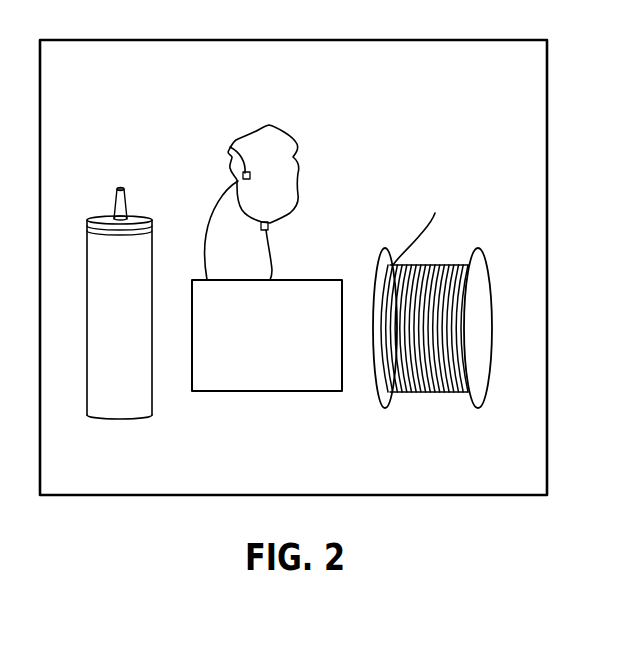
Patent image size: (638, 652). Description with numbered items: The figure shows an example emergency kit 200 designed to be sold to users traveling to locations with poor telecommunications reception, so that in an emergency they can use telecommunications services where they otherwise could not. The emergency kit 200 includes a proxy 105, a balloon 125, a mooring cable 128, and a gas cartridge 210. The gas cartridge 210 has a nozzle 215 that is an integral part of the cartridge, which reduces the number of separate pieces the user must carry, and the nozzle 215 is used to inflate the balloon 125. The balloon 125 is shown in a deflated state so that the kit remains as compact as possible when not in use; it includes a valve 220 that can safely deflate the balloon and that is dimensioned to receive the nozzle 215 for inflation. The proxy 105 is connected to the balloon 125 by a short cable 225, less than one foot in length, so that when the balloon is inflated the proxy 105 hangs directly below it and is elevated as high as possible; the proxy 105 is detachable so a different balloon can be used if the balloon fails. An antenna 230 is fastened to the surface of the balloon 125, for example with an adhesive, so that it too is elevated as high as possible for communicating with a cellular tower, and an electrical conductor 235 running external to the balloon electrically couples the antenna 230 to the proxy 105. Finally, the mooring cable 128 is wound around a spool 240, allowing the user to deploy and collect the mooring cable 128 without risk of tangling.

The emergency kit 200 is at (300, 40).
The gas cartridge 210 is at (122, 418).
The nozzle 215 is at (116, 190).
The balloon 125 is at (287, 130).
The antenna 230 is at (231, 149).
The electrical conductor 235 is at (214, 208).
The valve 220 is at (270, 230).
The cable 225 is at (273, 266).
The proxy 105 is at (258, 391).
The spool 240 is at (478, 250).
The mooring cable 128 is at (428, 220).